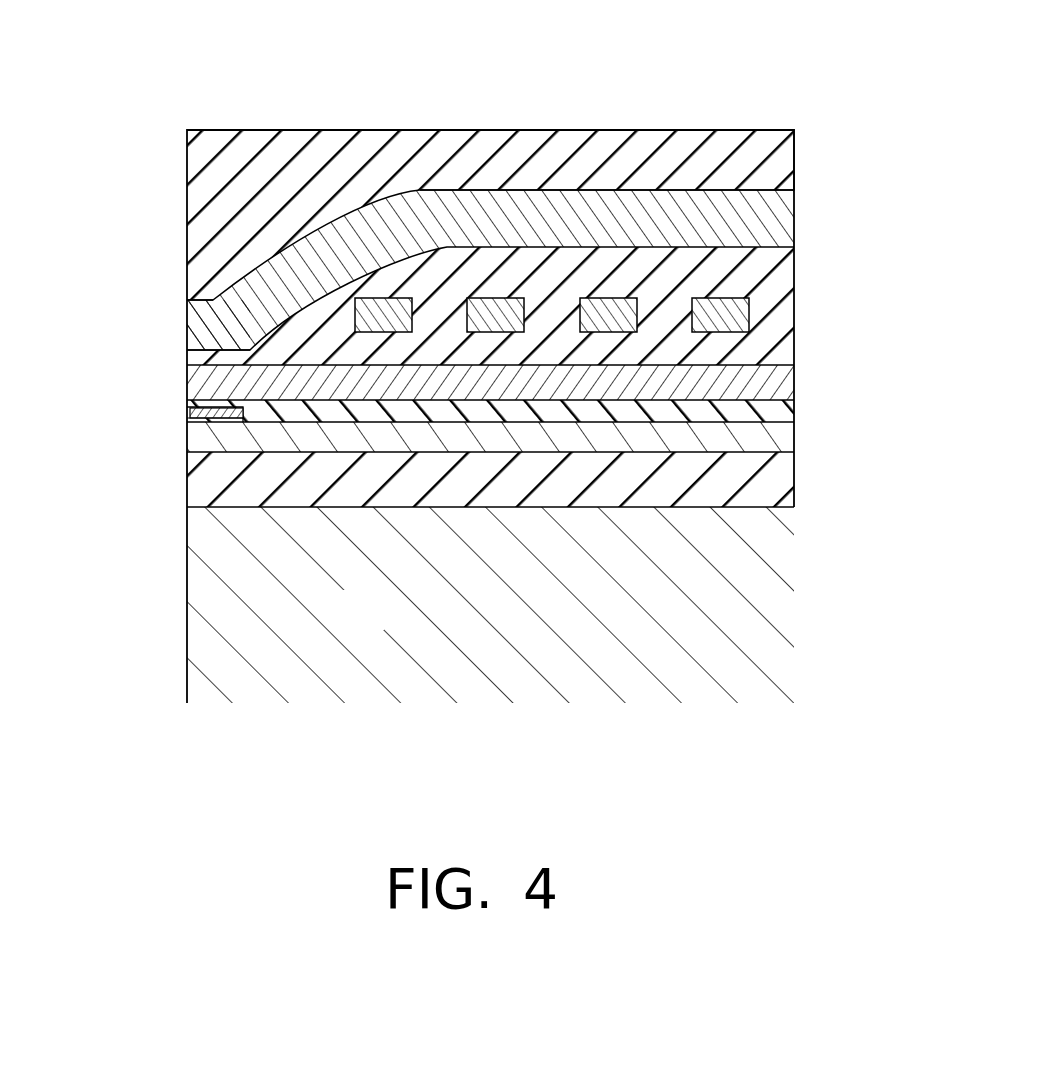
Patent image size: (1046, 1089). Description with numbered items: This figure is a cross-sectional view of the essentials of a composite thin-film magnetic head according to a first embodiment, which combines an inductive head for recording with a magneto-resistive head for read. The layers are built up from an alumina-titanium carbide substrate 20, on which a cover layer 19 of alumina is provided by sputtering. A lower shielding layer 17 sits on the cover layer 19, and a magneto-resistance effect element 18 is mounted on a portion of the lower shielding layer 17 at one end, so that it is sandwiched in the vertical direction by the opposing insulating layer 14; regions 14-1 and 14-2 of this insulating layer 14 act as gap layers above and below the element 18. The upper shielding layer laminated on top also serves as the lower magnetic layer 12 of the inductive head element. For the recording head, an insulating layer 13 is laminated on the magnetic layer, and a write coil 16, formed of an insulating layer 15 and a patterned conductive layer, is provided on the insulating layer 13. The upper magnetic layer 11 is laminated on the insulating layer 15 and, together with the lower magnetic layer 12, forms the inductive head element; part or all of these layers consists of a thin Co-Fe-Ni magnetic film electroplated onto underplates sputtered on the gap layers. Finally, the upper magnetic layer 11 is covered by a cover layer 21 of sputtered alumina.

The upper magnetic layer 11 is at (310, 242).
The cover layer 21 is at (494, 136).
The insulating layer 15 is at (597, 258).
The write coil 16 is at (773, 310).
The insulating layer 13 is at (193, 357).
The lower magnetic layer 12 is at (772, 380).
The insulating layer 14 is at (794, 407).
The region of insulating layer 14-1 is at (188, 405).
The magneto-resistance effect element 18 is at (207, 420).
The region of insulating layer 14-2 is at (204, 425).
The lower shielding layer 17 is at (193, 443).
The cover layer 19 is at (790, 485).
The substrate 20 is at (376, 624).